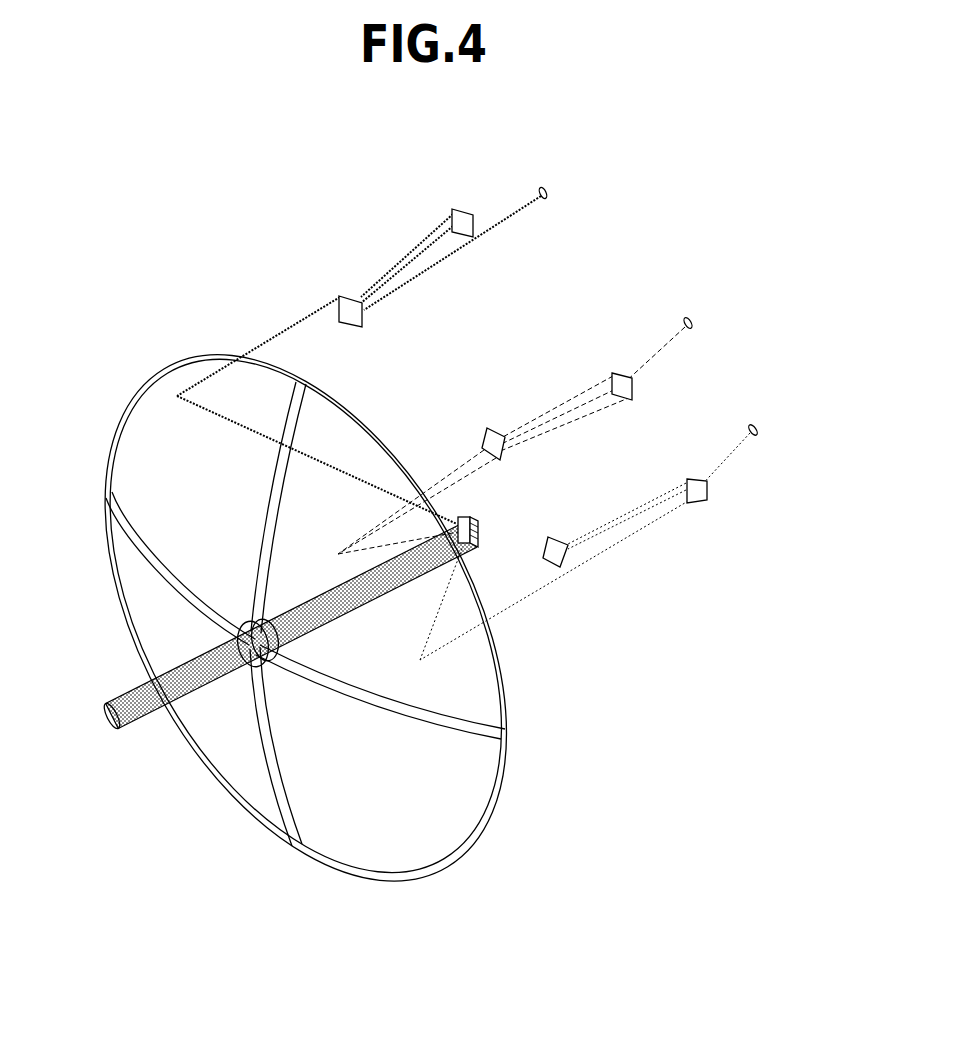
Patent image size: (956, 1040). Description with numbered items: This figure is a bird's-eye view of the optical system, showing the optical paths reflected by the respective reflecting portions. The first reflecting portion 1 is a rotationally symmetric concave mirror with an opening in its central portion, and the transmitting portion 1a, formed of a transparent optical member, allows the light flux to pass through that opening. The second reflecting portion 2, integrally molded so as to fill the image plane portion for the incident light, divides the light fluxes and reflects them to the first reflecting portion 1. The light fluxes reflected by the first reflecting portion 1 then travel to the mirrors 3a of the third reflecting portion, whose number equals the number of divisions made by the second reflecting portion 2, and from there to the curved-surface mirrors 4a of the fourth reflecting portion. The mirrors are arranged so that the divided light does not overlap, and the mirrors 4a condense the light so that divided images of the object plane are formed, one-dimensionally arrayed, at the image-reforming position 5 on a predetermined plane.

The first reflecting portion 1 is at (140, 443).
The transmitting portion 1a is at (240, 626).
The second reflecting portion 2 is at (462, 516).
The mirrors 3a is at (463, 209).
The mirrors 4a is at (350, 297).
The image-reforming position 5 is at (693, 318).